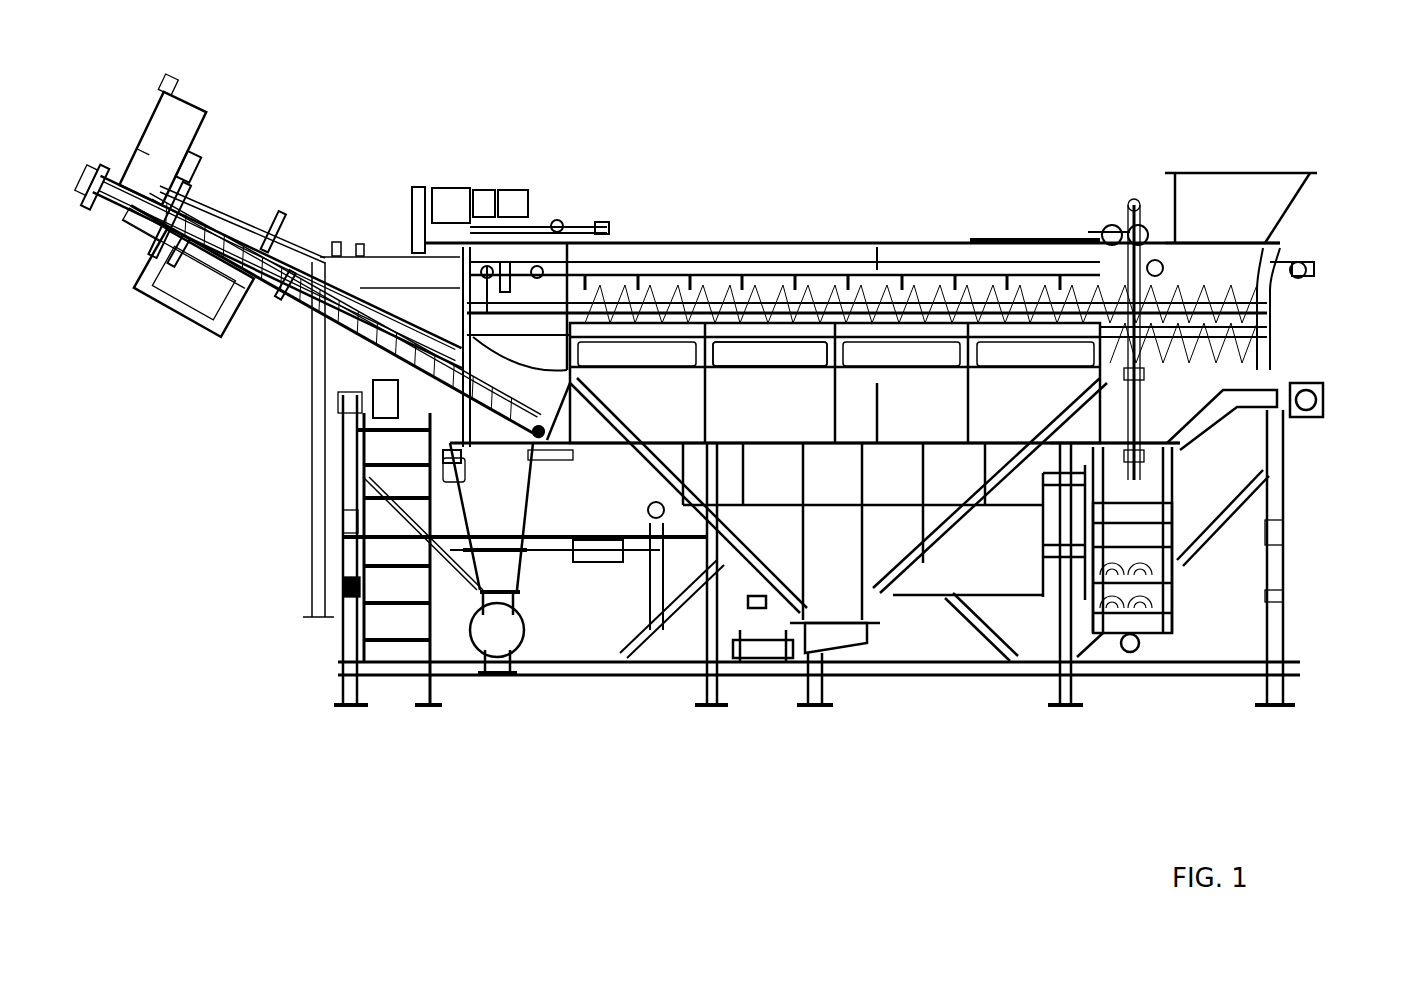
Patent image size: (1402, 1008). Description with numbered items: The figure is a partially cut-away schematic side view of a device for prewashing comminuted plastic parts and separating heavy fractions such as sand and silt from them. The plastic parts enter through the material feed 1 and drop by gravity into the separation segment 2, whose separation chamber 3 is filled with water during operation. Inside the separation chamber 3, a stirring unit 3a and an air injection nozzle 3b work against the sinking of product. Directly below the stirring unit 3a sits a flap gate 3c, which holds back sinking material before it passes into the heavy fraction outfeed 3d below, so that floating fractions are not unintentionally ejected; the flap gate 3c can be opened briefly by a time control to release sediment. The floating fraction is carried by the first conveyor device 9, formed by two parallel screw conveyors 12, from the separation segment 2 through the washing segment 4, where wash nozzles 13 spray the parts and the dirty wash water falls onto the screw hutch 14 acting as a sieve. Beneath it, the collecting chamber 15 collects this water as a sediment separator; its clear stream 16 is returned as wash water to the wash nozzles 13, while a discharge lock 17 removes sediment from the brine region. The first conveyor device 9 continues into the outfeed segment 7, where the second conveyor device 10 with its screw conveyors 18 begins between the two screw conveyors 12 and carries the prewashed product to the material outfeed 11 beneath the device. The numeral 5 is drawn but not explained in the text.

The material feed 1 is at (1223, 172).
The separation segment 2 is at (1198, 404).
The separation chamber 3 is at (1198, 404).
The stirring unit 3a is at (1138, 379).
The air injection nozzle 3b is at (1143, 477).
The flap gate 3c is at (1150, 518).
The heavy fraction outfeed 3d is at (1135, 690).
The washing segment 4 is at (797, 416).
The settling hopper 5 is at (841, 486).
The outfeed segment 7 is at (523, 499).
The first conveyor device 9 is at (1040, 303).
The second conveyor device 10 is at (322, 284).
The material outfeed 11 is at (223, 318).
The screw conveyor 12 is at (990, 312).
The wash nozzles 13 is at (795, 292).
The screw hutch 14 is at (668, 352).
The collecting chamber 15 is at (950, 530).
The clear stream 16 is at (755, 605).
The discharge lock 17 is at (830, 634).
The screw conveyors 18 is at (300, 288).